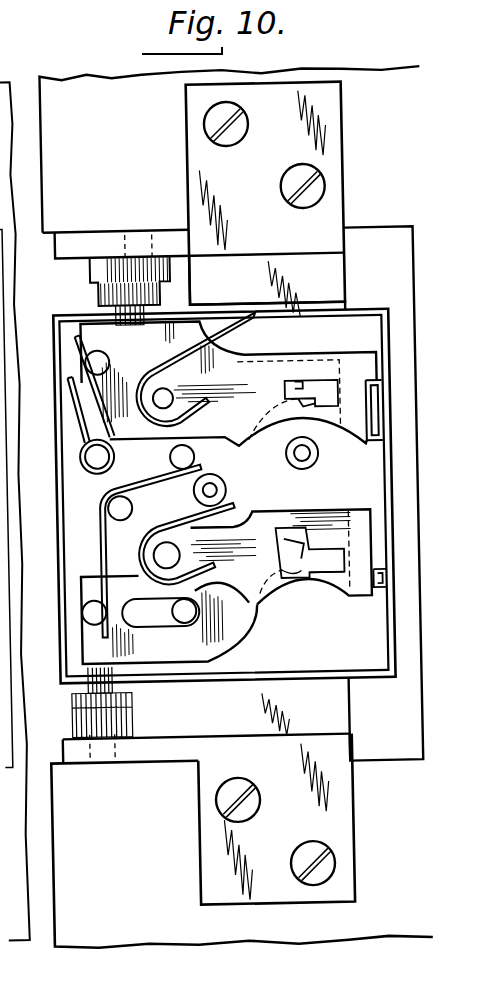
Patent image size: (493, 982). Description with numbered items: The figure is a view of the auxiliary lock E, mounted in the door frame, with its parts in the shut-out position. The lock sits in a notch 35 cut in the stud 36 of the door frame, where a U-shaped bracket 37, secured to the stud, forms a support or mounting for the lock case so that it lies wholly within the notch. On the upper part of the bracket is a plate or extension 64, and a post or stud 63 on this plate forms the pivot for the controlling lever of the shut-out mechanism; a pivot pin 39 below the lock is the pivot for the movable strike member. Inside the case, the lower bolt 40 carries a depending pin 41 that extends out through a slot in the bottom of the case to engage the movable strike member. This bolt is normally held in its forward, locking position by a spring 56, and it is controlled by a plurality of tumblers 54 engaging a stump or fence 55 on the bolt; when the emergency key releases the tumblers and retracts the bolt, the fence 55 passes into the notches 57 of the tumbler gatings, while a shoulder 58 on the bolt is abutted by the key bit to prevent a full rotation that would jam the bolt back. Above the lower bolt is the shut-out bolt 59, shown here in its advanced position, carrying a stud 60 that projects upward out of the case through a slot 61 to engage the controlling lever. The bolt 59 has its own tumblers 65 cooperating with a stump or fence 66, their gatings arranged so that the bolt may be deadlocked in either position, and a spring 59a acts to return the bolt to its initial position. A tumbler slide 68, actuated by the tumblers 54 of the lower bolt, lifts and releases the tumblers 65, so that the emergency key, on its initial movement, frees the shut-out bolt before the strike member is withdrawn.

The notch 35 is at (379, 730).
The stud 36 is at (242, 852).
The U-shaped bracket 37 is at (374, 818).
The pivot pin 39 is at (98, 751).
The bolt 40 is at (190, 649).
The depending pin 41 is at (110, 668).
The tumblers 54 is at (263, 518).
The stump or fence 55 is at (300, 518).
The spring 56 is at (99, 550).
The notches 57 is at (326, 565).
The shoulder 58 is at (296, 571).
The bolt 59 is at (228, 383).
The spring 59a is at (81, 344).
The stud 60 is at (120, 318).
The slot 61 is at (154, 311).
The post or stud 63 is at (137, 235).
The plate or extension 64 is at (87, 232).
The tumblers 65 is at (196, 371).
The stump or fence 66 is at (304, 383).
The tumbler slide 68 is at (0, 458).
The auxiliary lock E is at (362, 305).